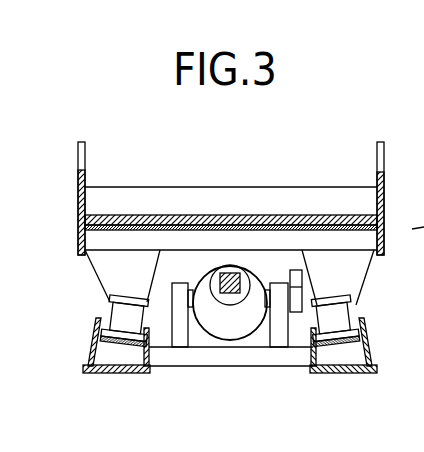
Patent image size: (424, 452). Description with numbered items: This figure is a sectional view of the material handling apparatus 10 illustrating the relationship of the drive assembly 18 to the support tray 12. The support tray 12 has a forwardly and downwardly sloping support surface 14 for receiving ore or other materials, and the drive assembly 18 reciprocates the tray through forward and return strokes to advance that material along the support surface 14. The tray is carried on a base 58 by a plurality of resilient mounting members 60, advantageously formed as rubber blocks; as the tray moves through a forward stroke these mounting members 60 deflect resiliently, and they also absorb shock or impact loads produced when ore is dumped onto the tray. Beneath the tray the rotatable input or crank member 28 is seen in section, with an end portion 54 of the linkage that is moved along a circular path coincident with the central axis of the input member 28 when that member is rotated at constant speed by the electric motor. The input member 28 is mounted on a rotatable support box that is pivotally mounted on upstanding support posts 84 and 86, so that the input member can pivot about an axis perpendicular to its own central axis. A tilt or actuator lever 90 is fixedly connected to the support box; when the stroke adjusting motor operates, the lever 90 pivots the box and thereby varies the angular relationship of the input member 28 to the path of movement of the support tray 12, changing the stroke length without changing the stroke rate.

The material handling apparatus 10 is at (230, 255).
The support tray 12 is at (75, 178).
The support surface 14 is at (142, 213).
The drive assembly 18 is at (213, 347).
The input member 28 is at (228, 333).
The end portion of the linkage 54 is at (235, 271).
The base 58 is at (93, 346).
The resilient mounting members 60 is at (122, 312).
The support post 84 is at (180, 340).
The support post 86 is at (272, 340).
The tilt lever 90 is at (295, 313).